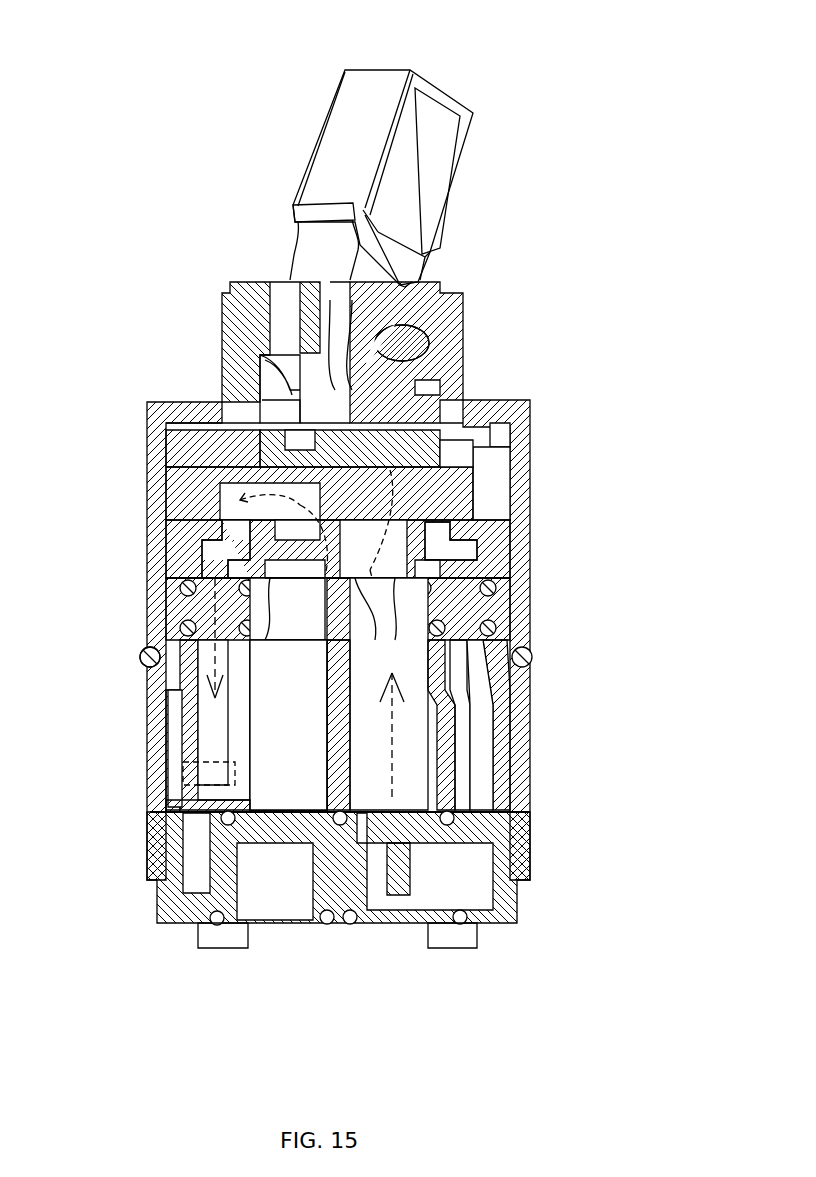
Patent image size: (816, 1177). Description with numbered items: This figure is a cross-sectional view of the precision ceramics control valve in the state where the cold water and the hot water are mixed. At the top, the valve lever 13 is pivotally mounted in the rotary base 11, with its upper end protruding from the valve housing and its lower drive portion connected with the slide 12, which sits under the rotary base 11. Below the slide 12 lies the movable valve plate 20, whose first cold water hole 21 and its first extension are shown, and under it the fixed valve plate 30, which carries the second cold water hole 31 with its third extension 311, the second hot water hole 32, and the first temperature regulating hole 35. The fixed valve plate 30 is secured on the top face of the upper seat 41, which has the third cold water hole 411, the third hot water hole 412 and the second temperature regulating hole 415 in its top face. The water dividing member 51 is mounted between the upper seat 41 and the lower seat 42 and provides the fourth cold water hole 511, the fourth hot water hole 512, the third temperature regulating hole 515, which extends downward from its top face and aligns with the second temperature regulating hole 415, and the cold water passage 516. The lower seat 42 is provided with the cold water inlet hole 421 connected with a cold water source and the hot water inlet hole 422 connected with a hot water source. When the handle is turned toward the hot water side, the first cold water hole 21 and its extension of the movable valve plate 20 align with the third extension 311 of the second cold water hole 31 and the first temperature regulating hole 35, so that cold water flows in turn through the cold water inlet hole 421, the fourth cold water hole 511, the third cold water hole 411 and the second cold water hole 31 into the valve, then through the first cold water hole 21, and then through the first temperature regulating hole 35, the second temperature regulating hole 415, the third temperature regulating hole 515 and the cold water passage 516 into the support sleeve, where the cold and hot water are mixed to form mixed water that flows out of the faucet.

The valve lever 13 is at (345, 105).
The rotary base 11 is at (440, 320).
The slide 12 is at (230, 455).
The movable valve plate 20 is at (500, 445).
The first cold water hole 21 is at (230, 445).
The fixed valve plate 30 is at (499, 510).
The third extension 311 is at (215, 540).
The second cold water hole 31 is at (485, 563).
The first temperature regulating hole 35 is at (165, 576).
The second temperature regulating hole 415 is at (200, 610).
The third cold water hole 411 is at (475, 605).
The second hot water hole 32 is at (288, 694).
The third hot water hole 412 is at (360, 640).
The third temperature regulating hole 515 is at (150, 668).
The water dividing member 51 is at (512, 662).
The fourth cold water hole 511 is at (460, 728).
The cold water passage 516 is at (185, 772).
The upper seat 41 is at (520, 800).
The fourth hot water hole 512 is at (210, 820).
The lower seat 42 is at (520, 885).
The cold water inlet hole 421 is at (420, 935).
The hot water inlet hole 422 is at (260, 907).